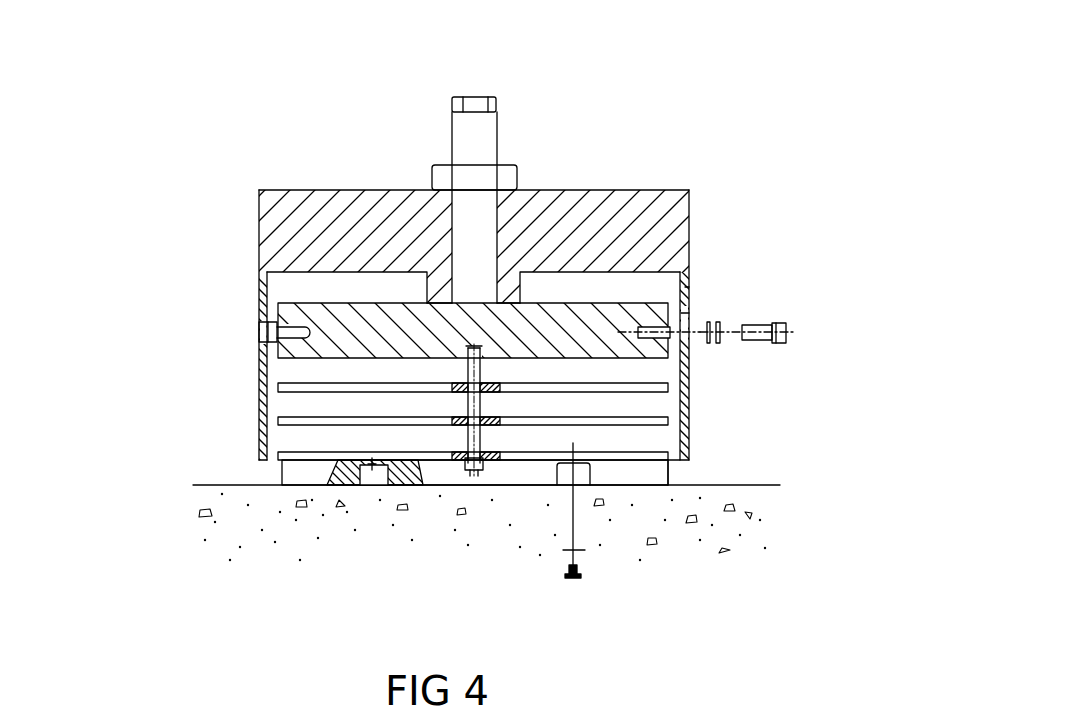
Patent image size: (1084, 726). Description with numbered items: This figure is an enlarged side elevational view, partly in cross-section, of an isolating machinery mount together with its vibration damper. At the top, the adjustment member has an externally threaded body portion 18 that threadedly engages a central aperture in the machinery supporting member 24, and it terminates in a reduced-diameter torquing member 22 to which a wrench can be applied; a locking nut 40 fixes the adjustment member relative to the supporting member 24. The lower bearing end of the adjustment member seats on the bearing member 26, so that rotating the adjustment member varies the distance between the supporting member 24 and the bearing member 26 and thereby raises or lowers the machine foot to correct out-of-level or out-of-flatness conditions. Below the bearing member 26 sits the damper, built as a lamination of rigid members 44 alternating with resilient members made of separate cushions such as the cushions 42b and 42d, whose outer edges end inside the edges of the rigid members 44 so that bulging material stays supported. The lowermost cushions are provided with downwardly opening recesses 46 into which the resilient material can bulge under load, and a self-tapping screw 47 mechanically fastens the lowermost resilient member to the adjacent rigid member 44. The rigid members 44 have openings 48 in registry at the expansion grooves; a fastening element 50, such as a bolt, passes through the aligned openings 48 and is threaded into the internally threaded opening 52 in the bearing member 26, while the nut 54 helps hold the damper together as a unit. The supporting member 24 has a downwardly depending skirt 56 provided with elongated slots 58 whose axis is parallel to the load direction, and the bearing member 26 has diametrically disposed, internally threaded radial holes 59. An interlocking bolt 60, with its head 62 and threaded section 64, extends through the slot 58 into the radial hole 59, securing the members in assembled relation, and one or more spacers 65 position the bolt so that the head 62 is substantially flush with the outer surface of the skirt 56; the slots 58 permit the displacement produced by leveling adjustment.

The externally threaded body portion 18 is at (499, 138).
The torquing member 22 is at (498, 95).
The machinery supporting member 24 is at (689, 190).
The bearing member 26 is at (322, 303).
The locking nut 40 is at (517, 175).
The cushion 42b is at (668, 477).
The cushion 42d is at (280, 473).
The rigid member 44 is at (280, 387).
The recess 46 is at (668, 597).
The self-tapping screw 47 is at (622, 620).
The opening 48 is at (452, 484).
The fastening element 50 is at (479, 488).
The internally threaded opening 52 is at (468, 348).
The nut 54 is at (473, 486).
The skirt 56 is at (689, 313).
The elongated slot 58 is at (873, 213).
The radial hole 59 is at (697, 258).
The interlocking bolt 60 is at (232, 320).
The bolt head 62 is at (834, 287).
The threaded section 64 is at (803, 363).
The spacer 65 is at (709, 344).